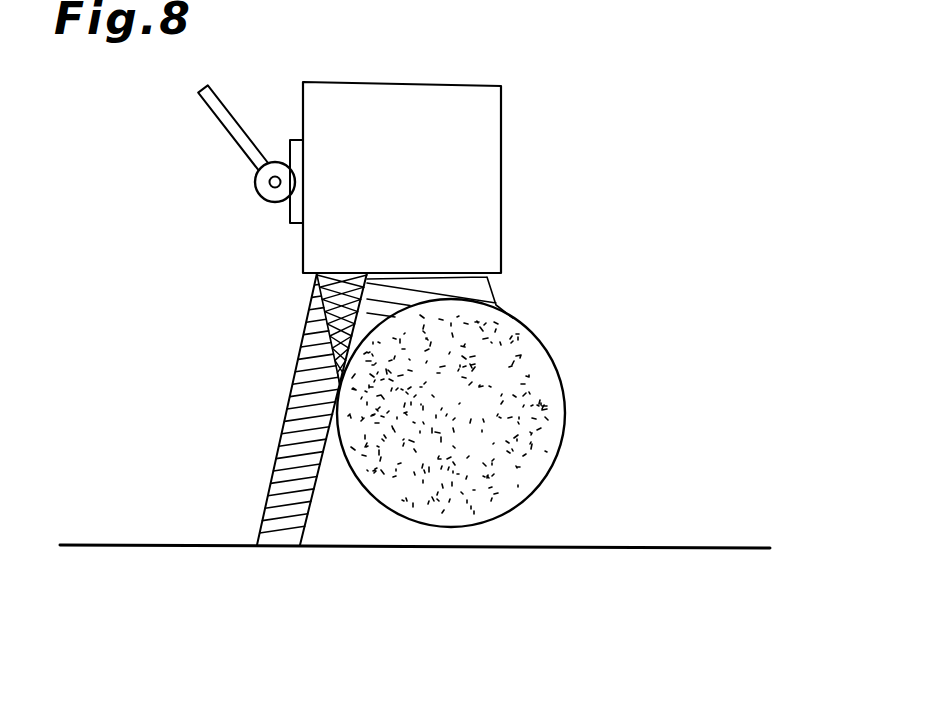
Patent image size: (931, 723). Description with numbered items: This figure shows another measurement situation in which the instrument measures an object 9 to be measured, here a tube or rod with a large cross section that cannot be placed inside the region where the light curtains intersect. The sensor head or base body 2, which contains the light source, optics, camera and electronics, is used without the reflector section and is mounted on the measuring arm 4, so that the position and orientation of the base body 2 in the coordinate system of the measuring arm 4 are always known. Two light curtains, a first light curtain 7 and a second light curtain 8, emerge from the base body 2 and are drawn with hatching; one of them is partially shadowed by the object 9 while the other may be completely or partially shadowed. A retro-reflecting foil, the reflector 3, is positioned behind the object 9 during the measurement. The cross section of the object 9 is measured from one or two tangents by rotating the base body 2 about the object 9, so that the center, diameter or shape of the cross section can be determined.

The base body 2 is at (472, 157).
The reflector 3 is at (626, 546).
The measuring arm 4 is at (240, 143).
The first light curtain 7 is at (285, 508).
The second light curtain 8 is at (488, 292).
The object to be measured 9 is at (528, 400).